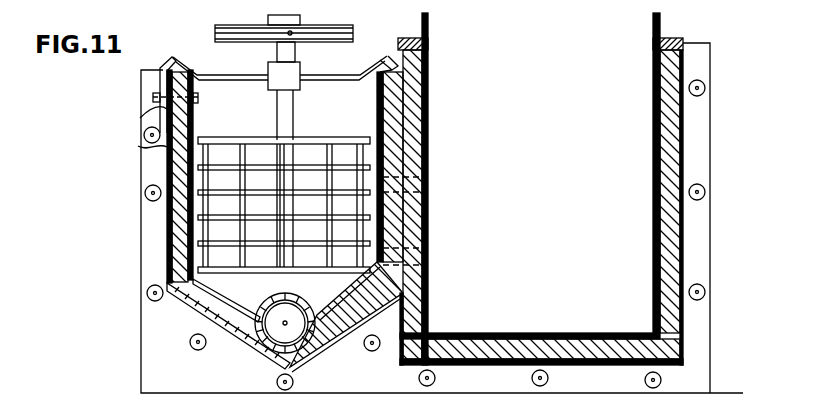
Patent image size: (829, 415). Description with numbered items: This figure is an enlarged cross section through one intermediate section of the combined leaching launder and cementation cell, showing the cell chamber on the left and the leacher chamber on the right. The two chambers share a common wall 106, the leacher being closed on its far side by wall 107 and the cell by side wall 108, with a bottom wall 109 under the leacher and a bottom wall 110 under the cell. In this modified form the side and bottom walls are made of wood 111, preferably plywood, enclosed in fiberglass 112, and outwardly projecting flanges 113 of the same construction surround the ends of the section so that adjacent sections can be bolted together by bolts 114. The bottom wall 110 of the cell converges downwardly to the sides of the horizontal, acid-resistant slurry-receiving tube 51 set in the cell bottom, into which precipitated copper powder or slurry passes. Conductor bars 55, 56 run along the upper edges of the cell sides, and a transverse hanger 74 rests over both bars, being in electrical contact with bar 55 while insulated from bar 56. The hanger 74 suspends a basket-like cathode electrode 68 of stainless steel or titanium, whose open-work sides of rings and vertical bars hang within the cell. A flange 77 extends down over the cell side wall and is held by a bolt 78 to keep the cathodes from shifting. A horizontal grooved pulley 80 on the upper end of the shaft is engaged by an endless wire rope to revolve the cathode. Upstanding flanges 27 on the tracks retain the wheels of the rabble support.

The upstanding flange 27 is at (430, 32).
The slurry-receiving tube 51 is at (312, 343).
The conductor bar 55 is at (173, 58).
The conductor bar 56 is at (385, 60).
The electrode 68 is at (320, 134).
The transverse hanger 74 is at (197, 70).
The flange 77 is at (145, 116).
The bolt 78 is at (143, 101).
The pulley 80 is at (260, 30).
The common wall 106 is at (428, 192).
The side wall 107 is at (683, 206).
The side wall 108 is at (144, 137).
The bottom wall 109 is at (530, 333).
The bottom wall 110 is at (232, 338).
The wood 111 is at (412, 101).
The fiberglass 112 is at (167, 206).
The flange 113 is at (140, 242).
The bolt 114 is at (190, 346).